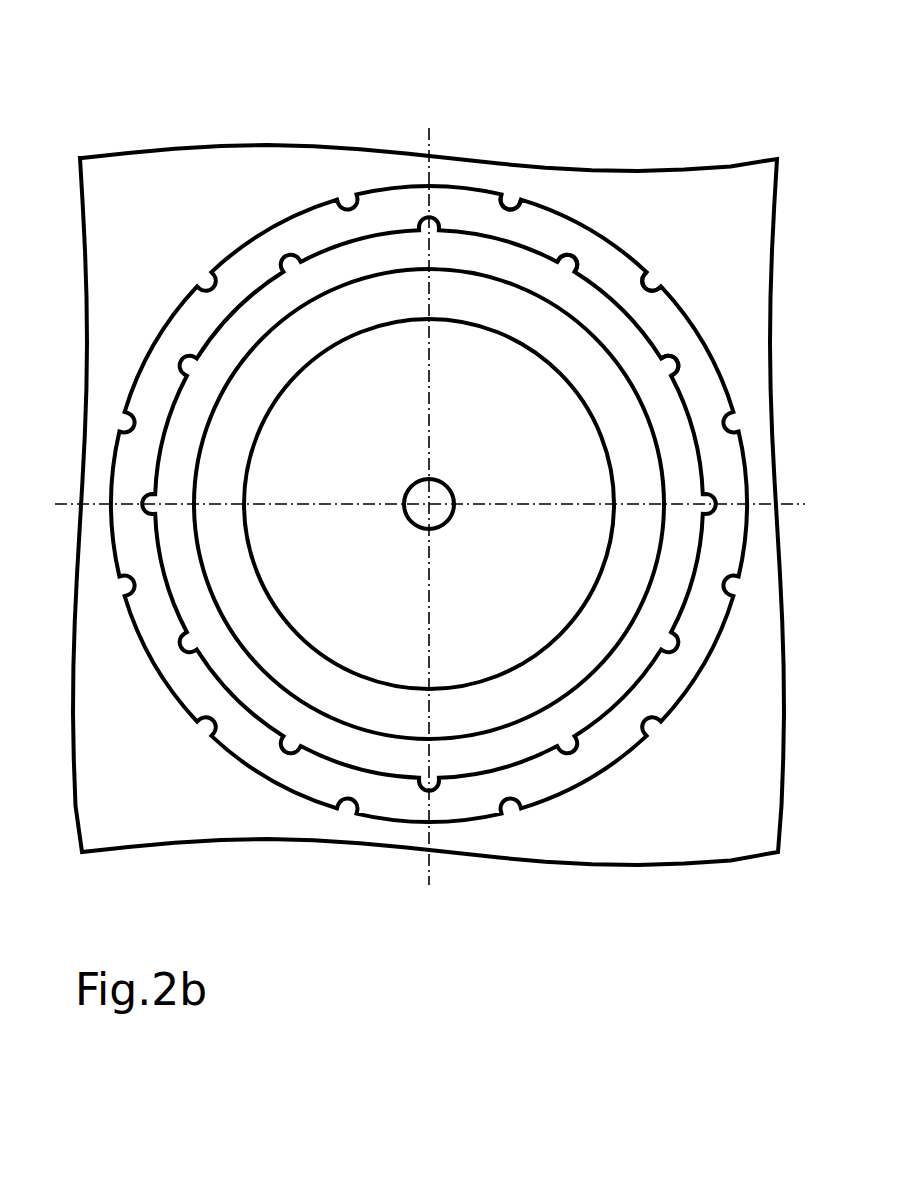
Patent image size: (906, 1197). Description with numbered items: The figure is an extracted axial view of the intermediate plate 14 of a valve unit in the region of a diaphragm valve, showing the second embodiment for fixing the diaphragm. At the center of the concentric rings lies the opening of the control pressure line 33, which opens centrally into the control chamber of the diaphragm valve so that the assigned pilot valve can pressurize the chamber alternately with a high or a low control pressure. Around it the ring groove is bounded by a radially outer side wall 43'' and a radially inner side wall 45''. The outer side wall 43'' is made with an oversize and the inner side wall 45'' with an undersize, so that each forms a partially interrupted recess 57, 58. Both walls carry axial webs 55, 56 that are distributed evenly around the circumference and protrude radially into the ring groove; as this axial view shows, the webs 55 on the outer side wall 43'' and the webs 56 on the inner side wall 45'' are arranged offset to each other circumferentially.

The intermediate plate 14 is at (185, 227).
The control pressure line 33 is at (437, 528).
The radially outer side wall 43'' is at (429, 555).
The radially inner side wall 45'' is at (429, 431).
The axial web 55 is at (653, 280).
The axial web 56 is at (670, 367).
The partially interrupted recess 57 is at (664, 663).
The partially interrupted recess 58 is at (625, 739).